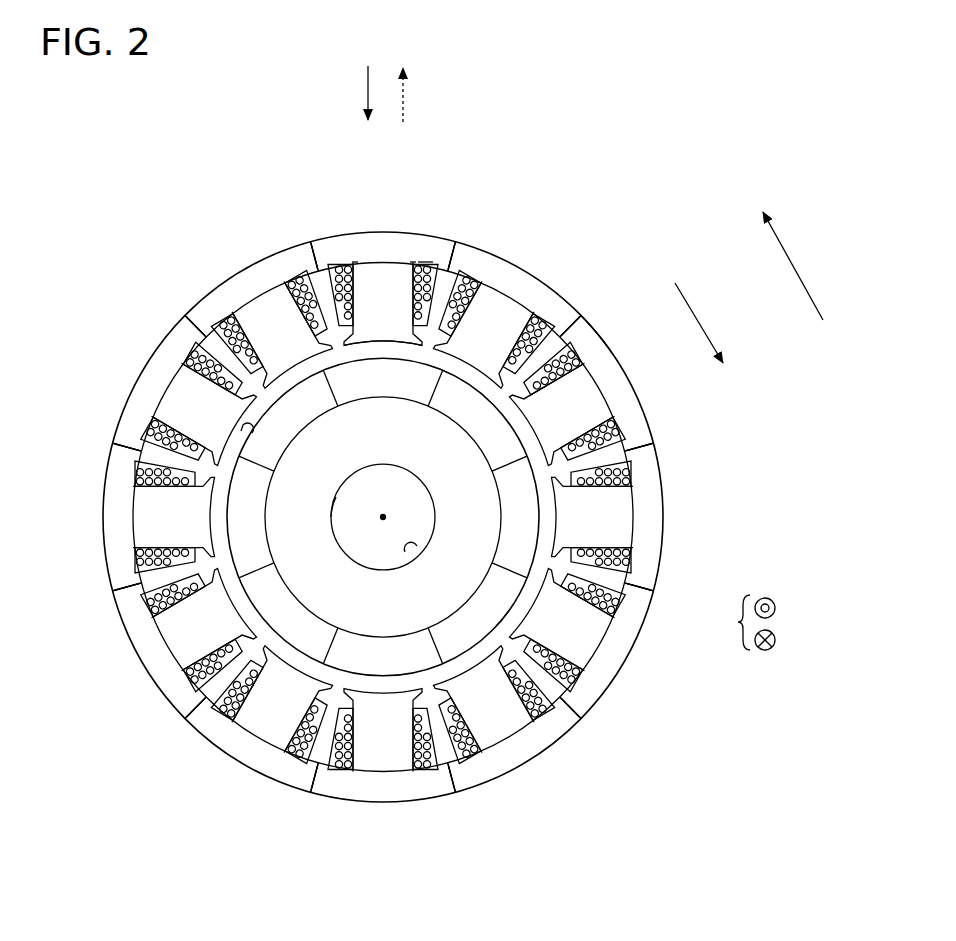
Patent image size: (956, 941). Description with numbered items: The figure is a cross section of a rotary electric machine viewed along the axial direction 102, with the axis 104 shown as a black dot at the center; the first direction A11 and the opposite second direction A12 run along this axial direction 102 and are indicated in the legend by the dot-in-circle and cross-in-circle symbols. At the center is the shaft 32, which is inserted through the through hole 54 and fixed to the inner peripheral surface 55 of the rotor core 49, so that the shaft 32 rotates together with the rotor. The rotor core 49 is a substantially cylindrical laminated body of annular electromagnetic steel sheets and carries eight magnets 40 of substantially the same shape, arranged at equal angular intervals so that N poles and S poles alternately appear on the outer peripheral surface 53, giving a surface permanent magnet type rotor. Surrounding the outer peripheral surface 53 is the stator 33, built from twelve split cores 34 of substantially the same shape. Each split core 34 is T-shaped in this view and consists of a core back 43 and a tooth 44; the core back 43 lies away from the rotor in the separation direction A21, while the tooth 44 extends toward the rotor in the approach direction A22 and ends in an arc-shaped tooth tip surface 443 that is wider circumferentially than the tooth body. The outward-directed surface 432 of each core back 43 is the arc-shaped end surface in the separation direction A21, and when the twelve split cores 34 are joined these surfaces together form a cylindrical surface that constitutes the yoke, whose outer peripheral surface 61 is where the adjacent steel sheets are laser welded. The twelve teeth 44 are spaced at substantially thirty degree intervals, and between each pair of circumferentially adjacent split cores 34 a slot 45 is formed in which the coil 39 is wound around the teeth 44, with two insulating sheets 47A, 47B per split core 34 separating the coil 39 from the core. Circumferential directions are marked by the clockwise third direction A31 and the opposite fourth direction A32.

The stator 33 is at (613, 205).
The split core 34 is at (404, 212).
The core back 43 is at (264, 295).
The tooth 44 is at (294, 349).
The slot 45 is at (455, 262).
The outward-directed surface 432 is at (462, 246).
The tooth tip surface 443 is at (362, 346).
The insulating sheet 47A is at (353, 262).
The insulating sheet 47B is at (416, 262).
The coil 39 is at (433, 262).
The magnet 40 is at (299, 431).
The rotor core 49 is at (391, 433).
The shaft 32 is at (365, 553).
The axis 104 is at (388, 512).
The outer peripheral surface 53 is at (248, 437).
The through hole 54 is at (350, 533).
The inner peripheral surface 55 is at (416, 553).
The outer peripheral surface 61 is at (600, 327).
The separation direction A21 is at (407, 95).
The approach direction A22 is at (365, 85).
The third direction A31 is at (704, 318).
The fourth direction A32 is at (787, 250).
The axial direction 102 is at (721, 622).
The first direction A11 is at (790, 608).
The second direction A12 is at (790, 640).